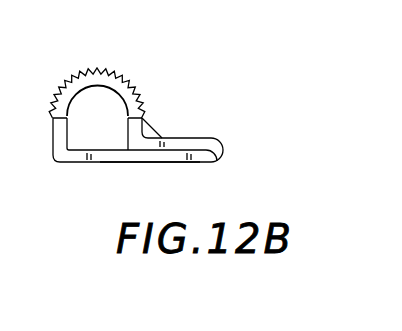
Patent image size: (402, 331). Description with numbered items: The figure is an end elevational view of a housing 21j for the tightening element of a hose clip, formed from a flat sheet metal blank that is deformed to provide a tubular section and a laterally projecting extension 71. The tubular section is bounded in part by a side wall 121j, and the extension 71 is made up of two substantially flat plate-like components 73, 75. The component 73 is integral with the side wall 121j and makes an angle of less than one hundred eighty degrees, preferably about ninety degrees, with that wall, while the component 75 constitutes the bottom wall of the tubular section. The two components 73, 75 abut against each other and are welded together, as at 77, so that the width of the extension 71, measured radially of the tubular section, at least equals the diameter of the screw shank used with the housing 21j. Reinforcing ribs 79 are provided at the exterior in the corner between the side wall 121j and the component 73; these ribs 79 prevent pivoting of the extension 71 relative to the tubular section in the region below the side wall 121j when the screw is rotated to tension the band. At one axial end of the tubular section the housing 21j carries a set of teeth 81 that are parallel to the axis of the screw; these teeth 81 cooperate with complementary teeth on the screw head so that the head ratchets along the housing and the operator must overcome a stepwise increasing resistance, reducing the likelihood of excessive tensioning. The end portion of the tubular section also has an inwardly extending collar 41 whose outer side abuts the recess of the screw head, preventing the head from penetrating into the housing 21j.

The inwardly extending collar 41 is at (116, 89).
The teeth 81 is at (92, 70).
The housing 21j is at (53, 89).
The side wall 121j is at (128, 132).
The reinforcing ribs 79 is at (144, 119).
The plate-like component 73 is at (198, 141).
The weld 77 is at (222, 156).
The plate-like component 75 is at (174, 163).
The extension 71 is at (237, 134).